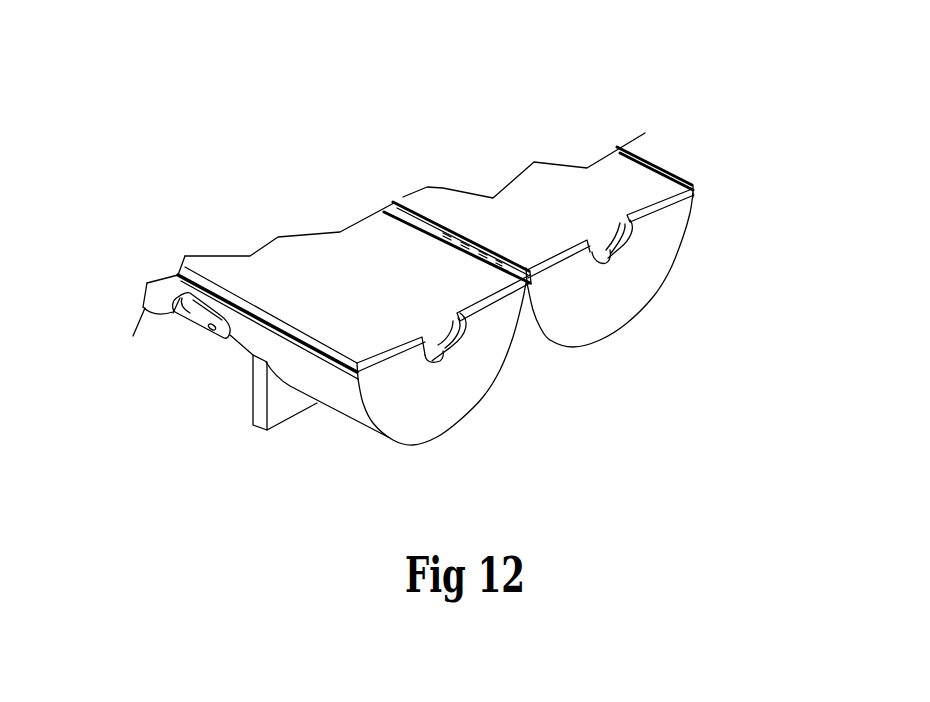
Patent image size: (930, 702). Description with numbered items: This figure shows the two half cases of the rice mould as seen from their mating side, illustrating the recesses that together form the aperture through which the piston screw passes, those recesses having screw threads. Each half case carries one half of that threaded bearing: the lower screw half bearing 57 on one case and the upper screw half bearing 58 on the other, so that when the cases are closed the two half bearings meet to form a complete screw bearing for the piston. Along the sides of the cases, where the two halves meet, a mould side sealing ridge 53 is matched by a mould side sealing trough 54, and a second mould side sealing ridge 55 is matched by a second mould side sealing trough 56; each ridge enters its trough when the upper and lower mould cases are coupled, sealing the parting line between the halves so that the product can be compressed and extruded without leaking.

The mould side sealing ridge 53 is at (240, 303).
The mould side sealing trough 54 is at (661, 166).
The mould side sealing ridge 55 is at (393, 200).
The mould side sealing trough 56 is at (404, 200).
The lower screw half bearing 57 is at (448, 322).
The upper screw half bearing 58 is at (602, 250).